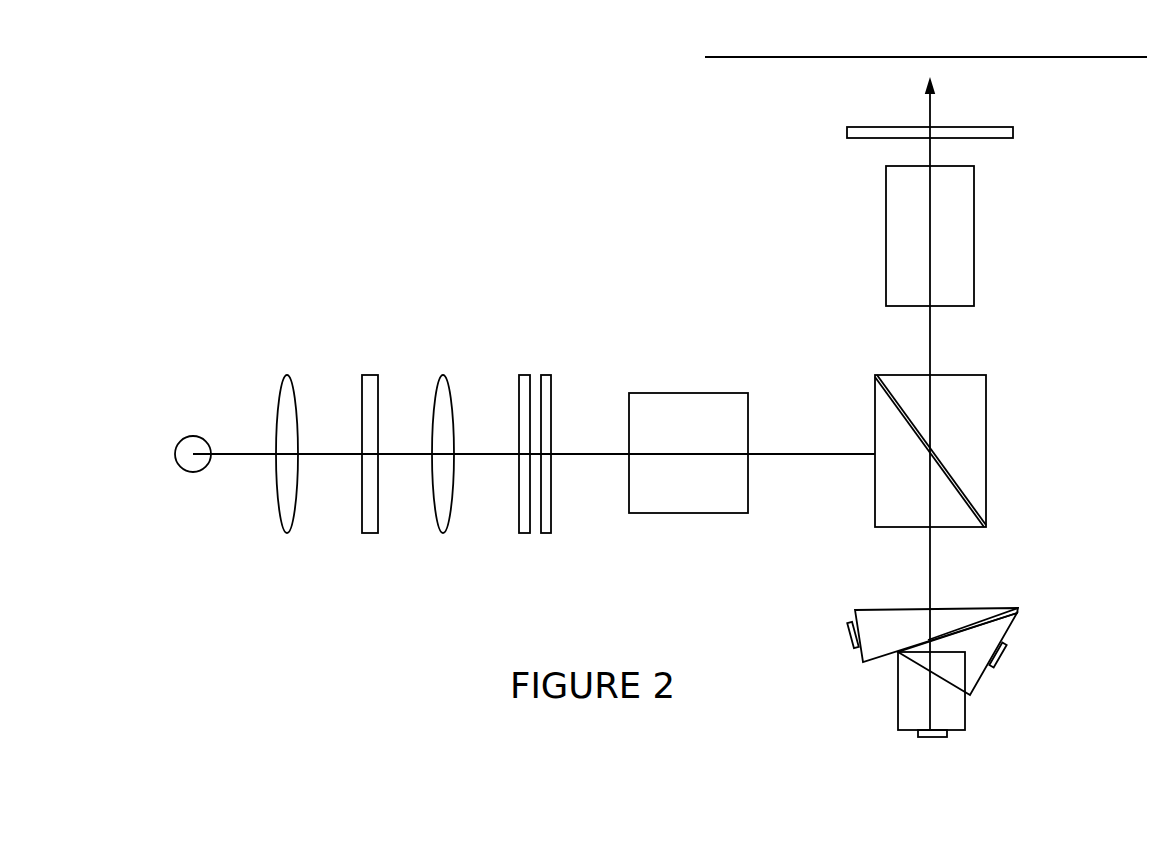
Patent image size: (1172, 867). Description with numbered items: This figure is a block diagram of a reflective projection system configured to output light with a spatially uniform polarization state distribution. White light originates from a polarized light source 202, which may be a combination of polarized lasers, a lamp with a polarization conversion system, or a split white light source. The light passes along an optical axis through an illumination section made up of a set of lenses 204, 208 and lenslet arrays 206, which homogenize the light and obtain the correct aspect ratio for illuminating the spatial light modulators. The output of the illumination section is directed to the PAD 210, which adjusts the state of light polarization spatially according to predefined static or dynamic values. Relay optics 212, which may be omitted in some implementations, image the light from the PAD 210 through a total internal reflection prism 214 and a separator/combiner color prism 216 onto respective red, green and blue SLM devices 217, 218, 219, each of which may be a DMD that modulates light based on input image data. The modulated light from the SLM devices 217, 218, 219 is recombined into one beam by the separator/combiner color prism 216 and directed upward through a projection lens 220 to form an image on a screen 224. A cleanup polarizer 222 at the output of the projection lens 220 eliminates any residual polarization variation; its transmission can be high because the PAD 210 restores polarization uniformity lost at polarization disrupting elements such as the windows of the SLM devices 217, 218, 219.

The polarized light source 202 is at (193, 443).
The lens 204 is at (286, 444).
The lenslet arrays 206 is at (368, 469).
The lens 208 is at (448, 444).
The PAD 210 is at (536, 469).
The relay optics 212 is at (688, 453).
The total internal reflection (TIR) prism 214 is at (990, 358).
The separator/combiner color prism 216 is at (960, 608).
The SLM device 217 is at (931, 709).
The SLM device 218 is at (1014, 657).
The SLM device 219 is at (831, 637).
The projection lens 220 is at (930, 236).
The cleanup polarizer 222 is at (1000, 108).
The screen 224 is at (926, 49).